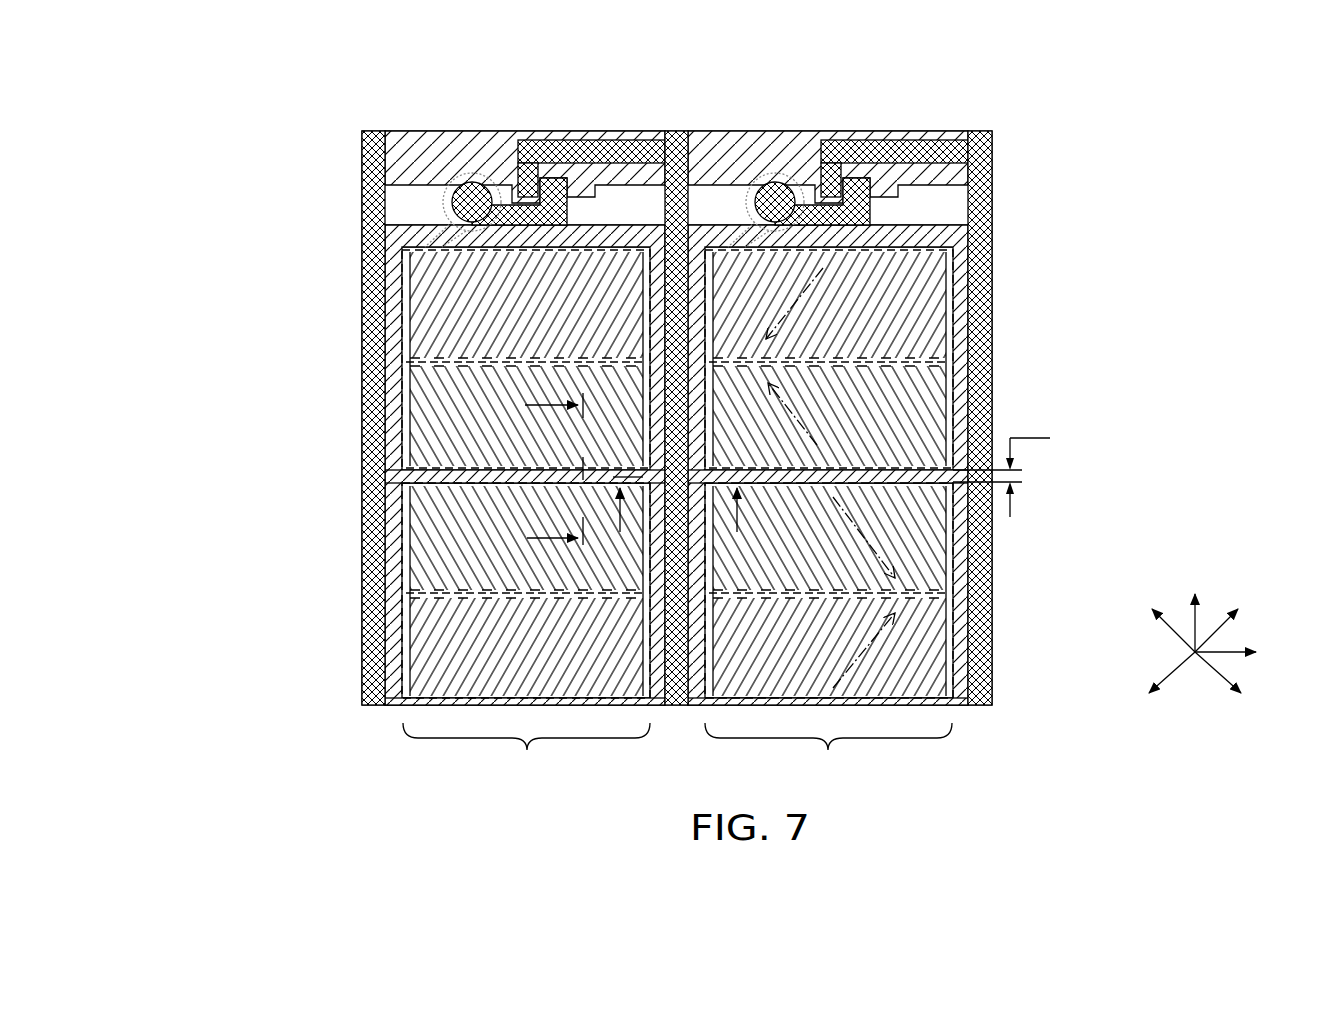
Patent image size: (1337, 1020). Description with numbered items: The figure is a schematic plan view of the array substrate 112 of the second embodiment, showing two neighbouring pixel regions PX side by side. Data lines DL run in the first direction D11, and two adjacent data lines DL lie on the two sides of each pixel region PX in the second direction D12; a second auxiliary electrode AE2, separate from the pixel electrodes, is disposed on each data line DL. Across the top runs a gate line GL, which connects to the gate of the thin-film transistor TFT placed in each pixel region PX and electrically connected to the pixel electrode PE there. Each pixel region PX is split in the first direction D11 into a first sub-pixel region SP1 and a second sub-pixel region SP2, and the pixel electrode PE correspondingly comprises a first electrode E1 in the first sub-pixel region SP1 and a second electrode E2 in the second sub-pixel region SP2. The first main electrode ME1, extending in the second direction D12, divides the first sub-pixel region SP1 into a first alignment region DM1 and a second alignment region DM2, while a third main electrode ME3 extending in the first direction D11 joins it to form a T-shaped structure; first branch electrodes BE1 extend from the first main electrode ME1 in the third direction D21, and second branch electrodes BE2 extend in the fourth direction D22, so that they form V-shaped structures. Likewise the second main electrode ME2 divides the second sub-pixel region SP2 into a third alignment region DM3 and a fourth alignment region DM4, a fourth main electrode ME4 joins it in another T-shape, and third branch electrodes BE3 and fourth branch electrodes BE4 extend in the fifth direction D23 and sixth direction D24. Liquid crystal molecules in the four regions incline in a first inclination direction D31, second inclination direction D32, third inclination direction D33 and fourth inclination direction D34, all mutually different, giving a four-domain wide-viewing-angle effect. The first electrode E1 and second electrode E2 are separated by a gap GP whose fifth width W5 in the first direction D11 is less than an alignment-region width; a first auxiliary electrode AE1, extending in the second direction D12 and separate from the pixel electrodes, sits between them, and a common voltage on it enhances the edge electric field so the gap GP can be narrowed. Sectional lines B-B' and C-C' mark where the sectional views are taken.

The array substrate 112 is at (982, 64).
The thin-film transistor TFT is at (563, 112).
The data lines DL is at (373, 130).
The second auxiliary electrode AE2 is at (673, 130).
The gate line GL is at (760, 130).
The first sub-pixel region SP1 is at (440, 228).
The second sub-pixel region SP2 is at (428, 703).
The first alignment region DM1 is at (900, 250).
The second alignment region DM2 is at (953, 398).
The third alignment region DM3 is at (965, 484).
The fourth alignment region DM4 is at (935, 706).
The first auxiliary electrode AE1 is at (410, 483).
The gap GP is at (420, 461).
The pixel electrode PE is at (829, 474).
The first electrode E1 is at (297, 455).
The second electrode E2 is at (297, 690).
The first branch electrodes BE1 is at (430, 274).
The second branch electrodes BE2 is at (445, 411).
The third branch electrodes BE3 is at (445, 518).
The fourth branch electrodes BE4 is at (430, 645).
The first main electrode ME1 is at (425, 356).
The second main electrode ME2 is at (427, 598).
The third main electrode ME3 is at (405, 382).
The fourth main electrode ME4 is at (642, 615).
The pixel region PX is at (677, 753).
The fifth width W5 is at (1001, 465).
The sectional line B-B' B is at (554, 430).
The sectional line B- B' is at (555, 529).
The sectional line C-C' C is at (620, 504).
The sectional line C- C' is at (731, 510).
The first direction D11 is at (1197, 606).
The second direction D12 is at (1249, 653).
The third direction D21 is at (1235, 615).
The fourth direction D22 is at (1233, 689).
The fifth direction D23 is at (1158, 615).
The sixth direction D24 is at (1157, 689).
The first inclination direction D31 is at (803, 303).
The second inclination direction D32 is at (804, 414).
The third inclination direction D33 is at (855, 537).
The fourth inclination direction D34 is at (855, 650).